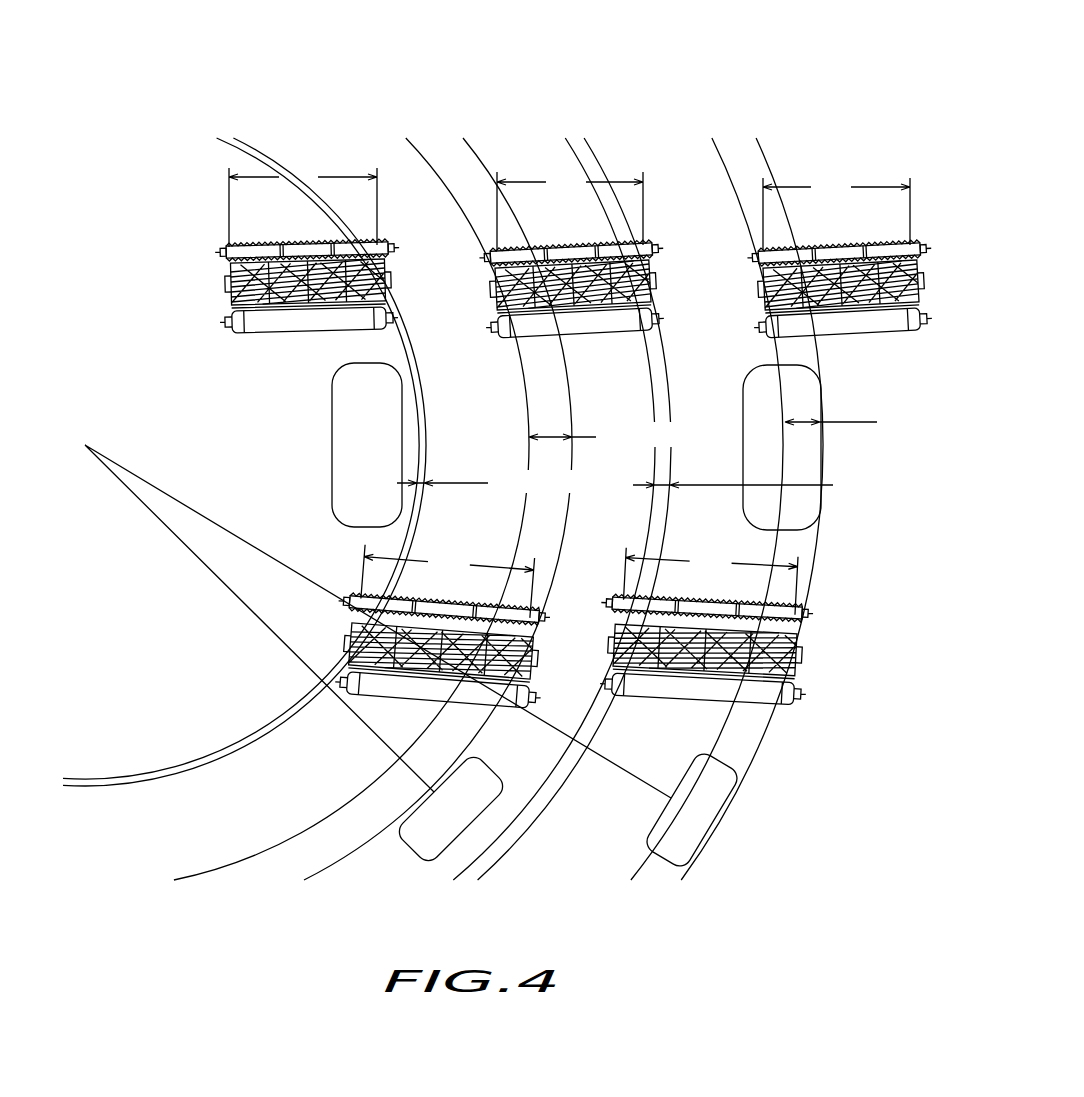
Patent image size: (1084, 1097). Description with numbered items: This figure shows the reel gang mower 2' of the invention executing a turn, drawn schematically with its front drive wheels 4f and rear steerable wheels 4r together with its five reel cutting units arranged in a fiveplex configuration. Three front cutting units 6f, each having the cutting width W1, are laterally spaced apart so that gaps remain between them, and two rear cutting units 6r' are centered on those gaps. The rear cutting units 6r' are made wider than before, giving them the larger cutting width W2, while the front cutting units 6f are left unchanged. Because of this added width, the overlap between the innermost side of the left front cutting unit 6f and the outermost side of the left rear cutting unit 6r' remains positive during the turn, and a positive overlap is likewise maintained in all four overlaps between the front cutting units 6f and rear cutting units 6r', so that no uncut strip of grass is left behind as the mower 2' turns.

The reel gang mower 2' is at (443, 444).
The front cutting units 6f is at (318, 162).
The front drive wheels 4f is at (332, 418).
The rear cutting units 6r' is at (572, 679).
The rear steerable wheels 4r is at (430, 862).
The cutting width of front cutting units W1 is at (569, 208).
The cutting width of rear cutting units W2 is at (579, 581).